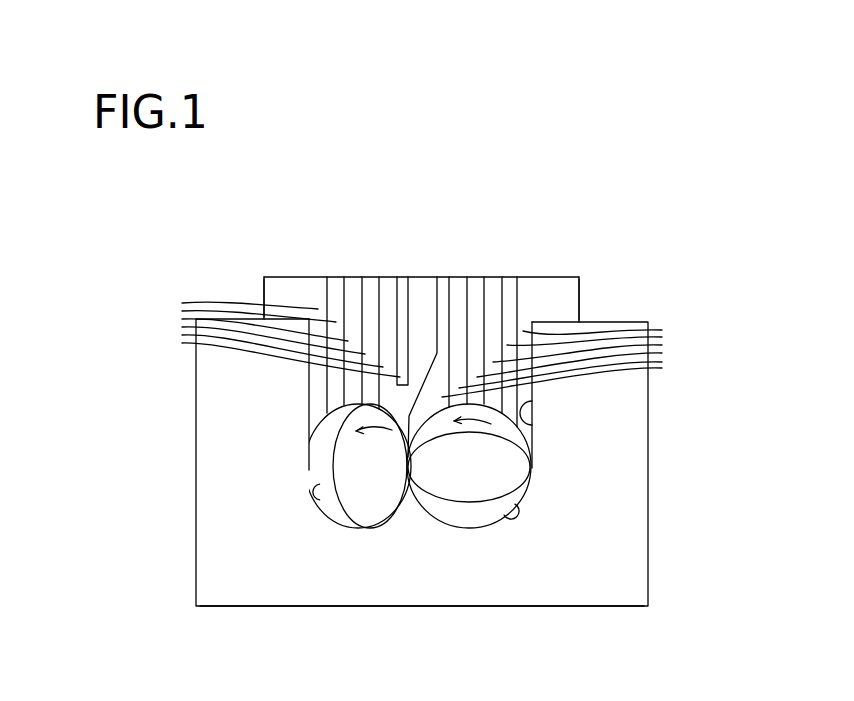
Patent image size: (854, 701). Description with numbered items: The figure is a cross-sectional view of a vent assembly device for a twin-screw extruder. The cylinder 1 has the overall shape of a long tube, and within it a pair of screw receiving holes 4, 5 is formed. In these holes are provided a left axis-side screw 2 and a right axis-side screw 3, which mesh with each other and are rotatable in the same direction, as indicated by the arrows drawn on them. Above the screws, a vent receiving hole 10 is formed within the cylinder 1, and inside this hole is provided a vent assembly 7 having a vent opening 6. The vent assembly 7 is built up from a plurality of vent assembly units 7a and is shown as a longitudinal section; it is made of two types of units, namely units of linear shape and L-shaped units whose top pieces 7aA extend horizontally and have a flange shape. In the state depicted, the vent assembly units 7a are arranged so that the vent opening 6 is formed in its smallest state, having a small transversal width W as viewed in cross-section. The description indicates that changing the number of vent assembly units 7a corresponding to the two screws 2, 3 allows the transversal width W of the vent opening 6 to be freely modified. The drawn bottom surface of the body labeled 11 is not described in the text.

The cylinder 1 is at (225, 430).
The left axis-side screw 2 is at (350, 492).
The right axis-side screw 3 is at (490, 492).
The screw receiving hole 4 is at (312, 485).
The screw receiving hole 5 is at (505, 522).
The vent opening 6 is at (426, 289).
The vent assembly 7 is at (588, 270).
The vent assembly unit 7a is at (182, 350).
The top piece 7aA is at (295, 287).
The vent receiving hole 10 is at (533, 425).
The bottom surface 11 is at (315, 617).
The transversal width W is at (418, 277).